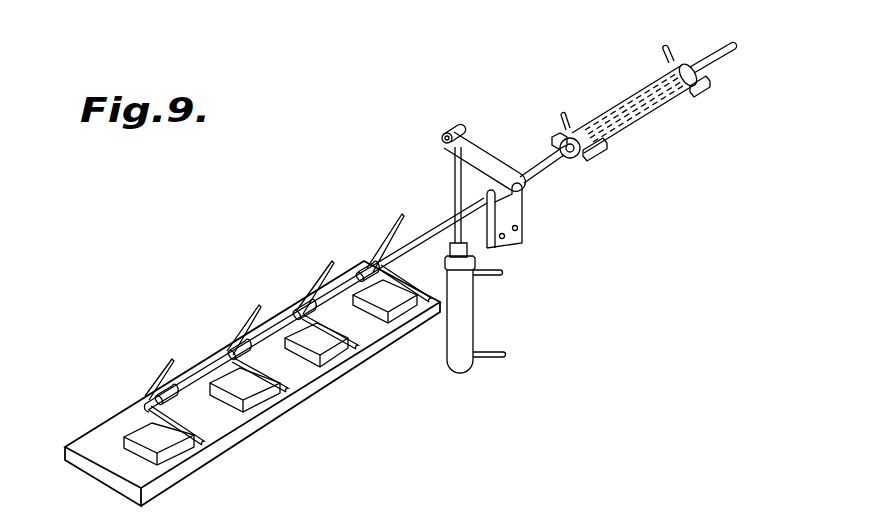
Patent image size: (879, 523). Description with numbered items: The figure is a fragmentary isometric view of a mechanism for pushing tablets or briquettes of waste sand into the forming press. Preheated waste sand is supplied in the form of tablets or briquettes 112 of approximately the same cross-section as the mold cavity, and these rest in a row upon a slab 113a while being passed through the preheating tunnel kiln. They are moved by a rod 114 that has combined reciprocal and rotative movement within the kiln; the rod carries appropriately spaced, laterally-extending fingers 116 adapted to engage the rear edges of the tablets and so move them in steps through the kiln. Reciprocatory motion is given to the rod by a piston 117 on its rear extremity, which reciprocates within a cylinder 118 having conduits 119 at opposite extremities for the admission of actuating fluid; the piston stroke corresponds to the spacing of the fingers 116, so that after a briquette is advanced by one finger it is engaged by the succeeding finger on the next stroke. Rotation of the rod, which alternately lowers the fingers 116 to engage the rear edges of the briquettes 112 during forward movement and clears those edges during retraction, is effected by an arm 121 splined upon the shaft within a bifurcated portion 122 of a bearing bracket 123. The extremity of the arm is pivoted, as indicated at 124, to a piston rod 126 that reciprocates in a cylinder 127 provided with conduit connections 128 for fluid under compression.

The slab 113a is at (108, 435).
The tablets or briquettes 112 is at (333, 355).
The rod 114 is at (197, 385).
The fingers 116 is at (204, 444).
The piston 117 is at (648, 86).
The cylinder 118 is at (665, 98).
The conduits 119 is at (681, 38).
The arm 121 is at (480, 150).
The bifurcated portion 122 is at (525, 190).
The bearing bracket 123 is at (523, 233).
The pivot 124 is at (442, 139).
The piston rod 126 is at (455, 190).
The cylinder 127 is at (468, 313).
The conduit connections 128 is at (503, 355).